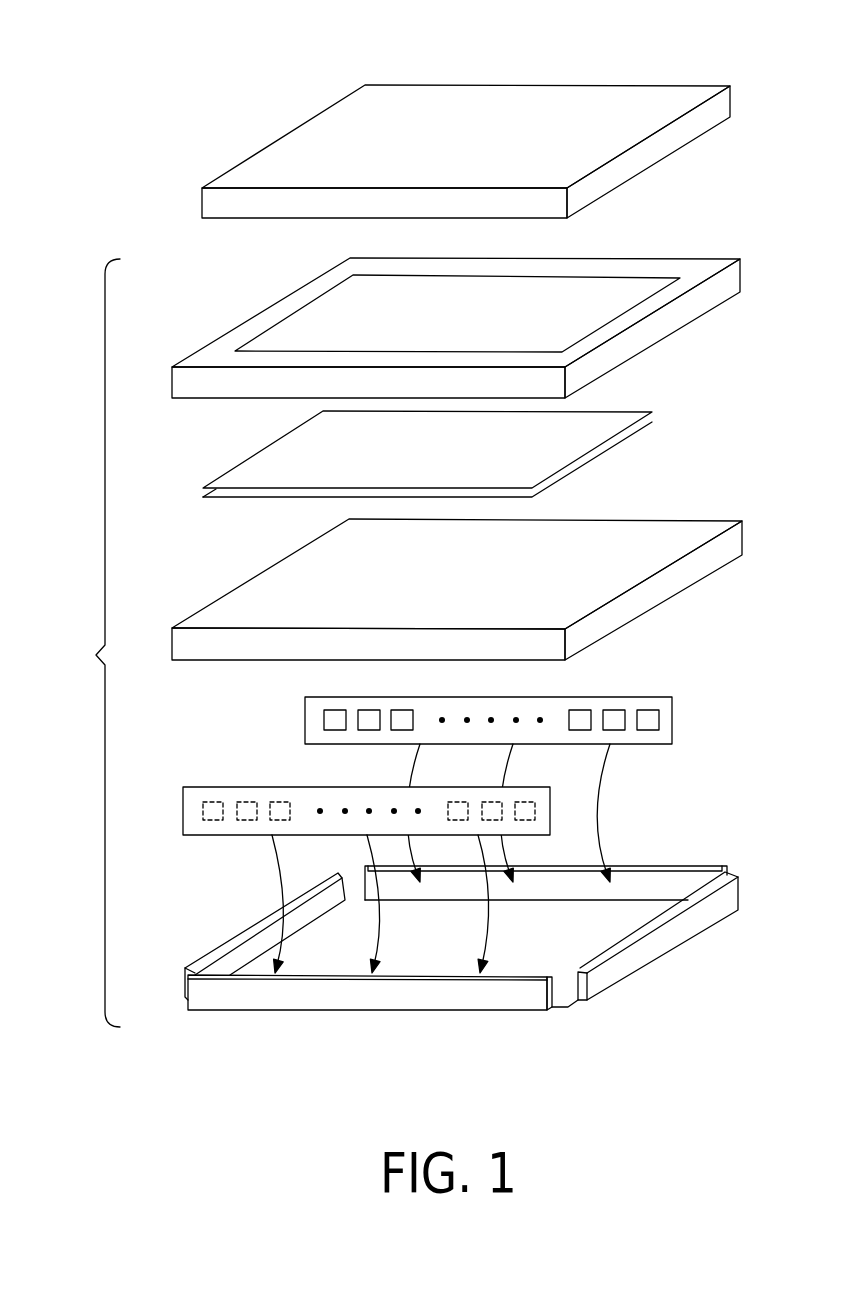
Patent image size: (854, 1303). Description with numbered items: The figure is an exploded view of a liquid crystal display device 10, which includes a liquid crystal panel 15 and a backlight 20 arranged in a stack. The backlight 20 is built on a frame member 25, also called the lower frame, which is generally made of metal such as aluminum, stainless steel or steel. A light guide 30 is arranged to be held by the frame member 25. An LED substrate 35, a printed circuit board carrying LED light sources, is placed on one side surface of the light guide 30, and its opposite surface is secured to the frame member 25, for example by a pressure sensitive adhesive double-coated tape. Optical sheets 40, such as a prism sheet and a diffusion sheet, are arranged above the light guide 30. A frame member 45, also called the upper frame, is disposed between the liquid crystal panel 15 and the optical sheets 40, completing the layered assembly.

The liquid crystal display device 10 is at (82, 56).
The liquid crystal panel 15 is at (659, 87).
The backlight 20 is at (94, 643).
The frame member 25 is at (668, 940).
The light guide 30 is at (223, 597).
The LED substrate 35 is at (652, 695).
The optical sheets 40 is at (660, 410).
The frame member 45 is at (680, 258).